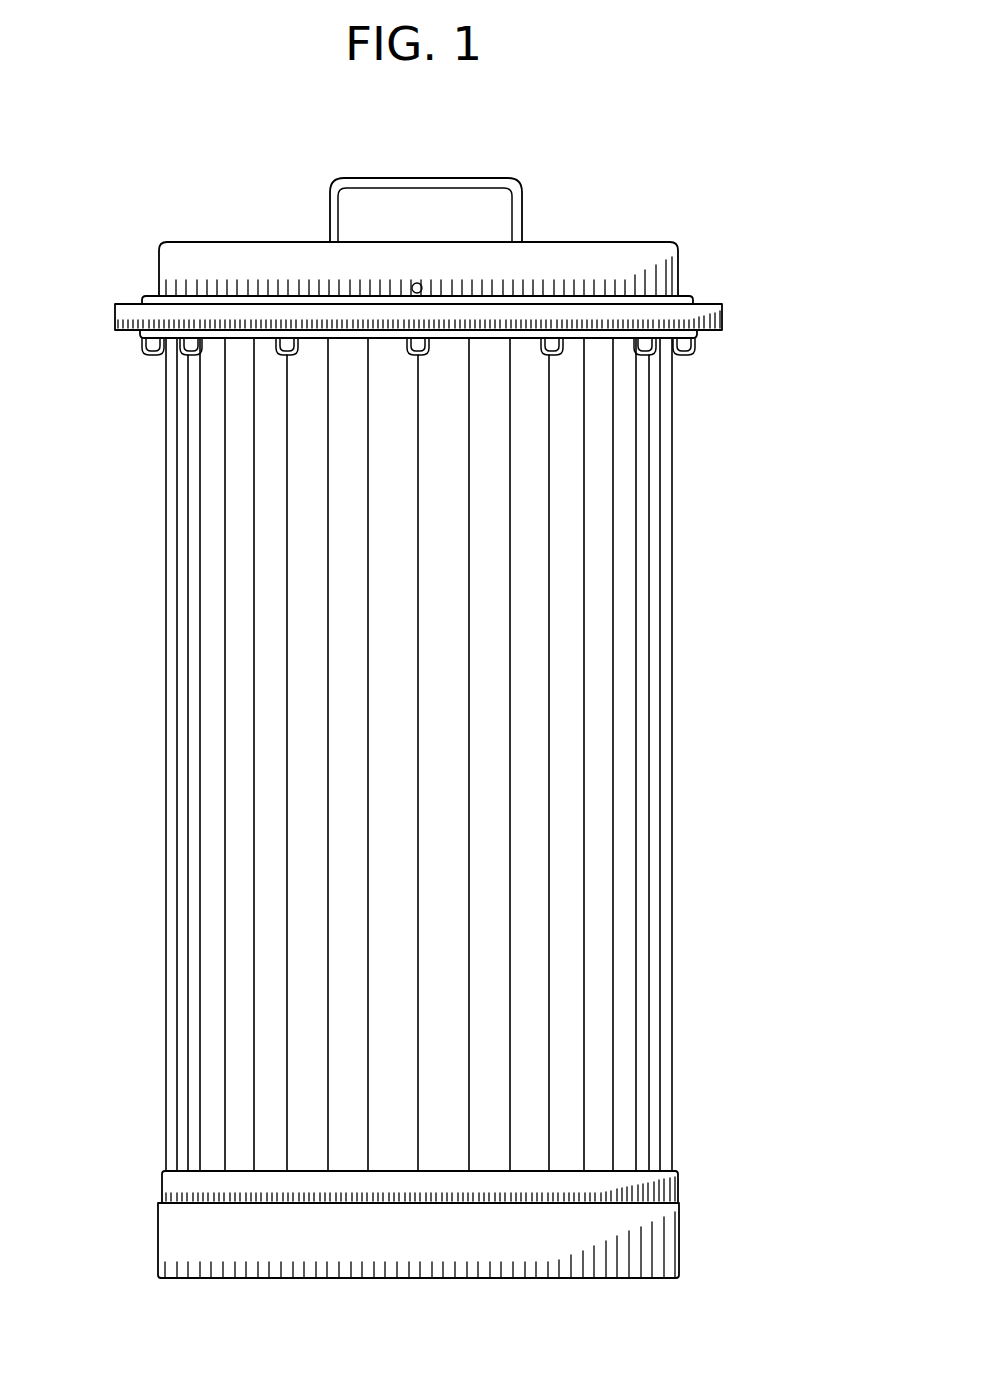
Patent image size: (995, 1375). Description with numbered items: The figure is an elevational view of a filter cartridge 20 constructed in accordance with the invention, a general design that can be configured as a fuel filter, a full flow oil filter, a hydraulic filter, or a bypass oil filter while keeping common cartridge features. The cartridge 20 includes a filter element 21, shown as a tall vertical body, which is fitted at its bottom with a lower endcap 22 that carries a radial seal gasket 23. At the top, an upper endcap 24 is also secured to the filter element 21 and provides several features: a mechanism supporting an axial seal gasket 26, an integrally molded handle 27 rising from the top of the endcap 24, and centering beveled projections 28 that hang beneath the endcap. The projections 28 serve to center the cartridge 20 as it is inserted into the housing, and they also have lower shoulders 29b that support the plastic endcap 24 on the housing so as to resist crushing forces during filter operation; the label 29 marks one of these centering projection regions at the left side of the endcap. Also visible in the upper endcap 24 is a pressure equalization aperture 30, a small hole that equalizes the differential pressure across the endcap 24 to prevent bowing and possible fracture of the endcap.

The cartridge 20 is at (792, 550).
The filter element 21 is at (210, 783).
The lower endcap 22 is at (162, 1186).
The radial seal gasket 23 is at (680, 1238).
The upper endcap 24 is at (158, 262).
The axial seal gasket 26 is at (715, 315).
The handle 27 is at (500, 177).
The centering beveled projections 28 is at (686, 348).
The clip 29 is at (140, 345).
The lower shoulders 29b is at (153, 355).
The pressure equalization aperture 30 is at (415, 283).